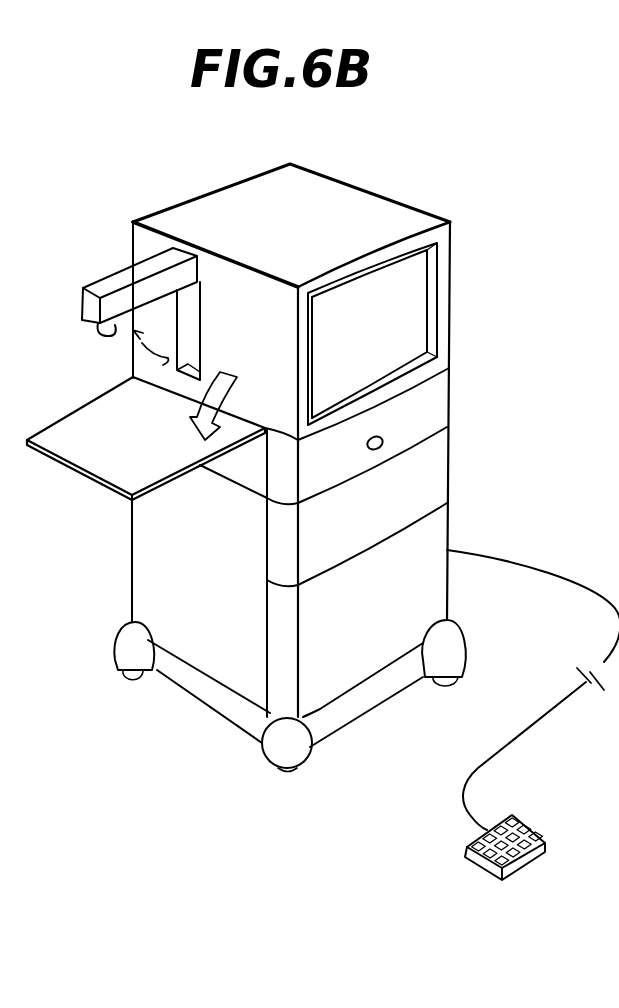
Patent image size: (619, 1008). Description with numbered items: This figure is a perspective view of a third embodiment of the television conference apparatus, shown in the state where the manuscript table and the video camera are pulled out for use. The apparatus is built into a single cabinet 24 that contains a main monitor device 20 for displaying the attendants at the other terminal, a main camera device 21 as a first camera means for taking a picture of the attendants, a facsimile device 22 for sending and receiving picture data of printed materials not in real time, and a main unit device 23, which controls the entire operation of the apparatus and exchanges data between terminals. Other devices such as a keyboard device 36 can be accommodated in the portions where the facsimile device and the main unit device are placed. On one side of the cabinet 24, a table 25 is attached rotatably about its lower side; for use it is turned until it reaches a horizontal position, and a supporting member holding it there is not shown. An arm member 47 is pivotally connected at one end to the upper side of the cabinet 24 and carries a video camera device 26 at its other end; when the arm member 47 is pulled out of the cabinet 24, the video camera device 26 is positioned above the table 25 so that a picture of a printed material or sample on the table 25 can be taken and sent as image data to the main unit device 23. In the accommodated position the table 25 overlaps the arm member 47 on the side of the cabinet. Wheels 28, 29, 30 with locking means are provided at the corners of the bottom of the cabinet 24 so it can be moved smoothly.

The main monitor device 20 is at (413, 330).
The main camera device 21 is at (382, 438).
The group 3 facsimile device 22 is at (428, 487).
The main unit device 23 is at (427, 548).
The cabinet 24 is at (402, 202).
The table 25 is at (85, 460).
The video camera device 26 is at (105, 338).
The wheel 28 is at (137, 680).
The wheel 29 is at (293, 772).
The wheel 30 is at (445, 688).
The keyboard device 36 is at (527, 820).
The arm member 47 is at (110, 275).